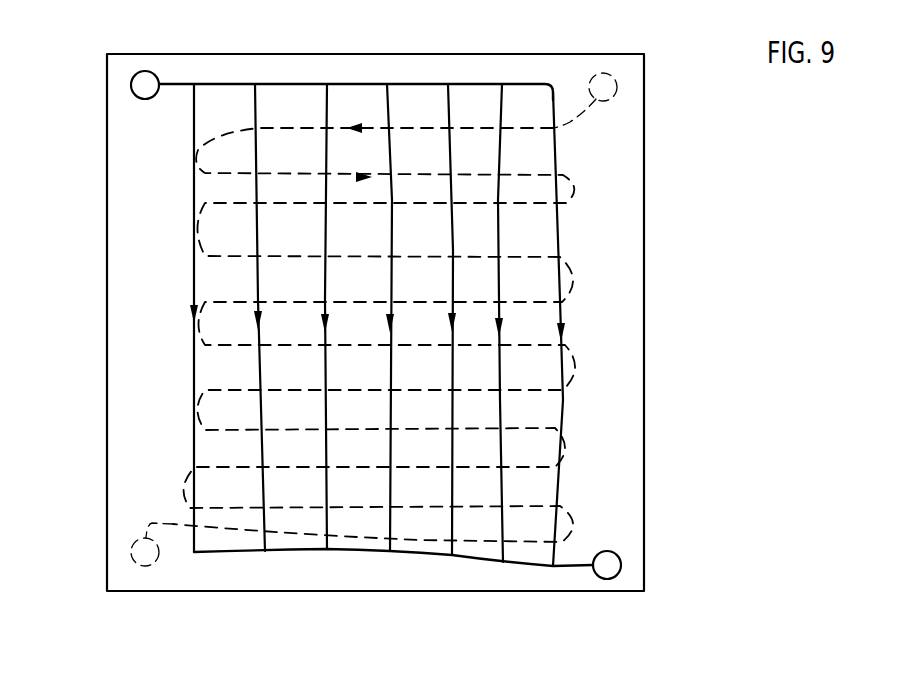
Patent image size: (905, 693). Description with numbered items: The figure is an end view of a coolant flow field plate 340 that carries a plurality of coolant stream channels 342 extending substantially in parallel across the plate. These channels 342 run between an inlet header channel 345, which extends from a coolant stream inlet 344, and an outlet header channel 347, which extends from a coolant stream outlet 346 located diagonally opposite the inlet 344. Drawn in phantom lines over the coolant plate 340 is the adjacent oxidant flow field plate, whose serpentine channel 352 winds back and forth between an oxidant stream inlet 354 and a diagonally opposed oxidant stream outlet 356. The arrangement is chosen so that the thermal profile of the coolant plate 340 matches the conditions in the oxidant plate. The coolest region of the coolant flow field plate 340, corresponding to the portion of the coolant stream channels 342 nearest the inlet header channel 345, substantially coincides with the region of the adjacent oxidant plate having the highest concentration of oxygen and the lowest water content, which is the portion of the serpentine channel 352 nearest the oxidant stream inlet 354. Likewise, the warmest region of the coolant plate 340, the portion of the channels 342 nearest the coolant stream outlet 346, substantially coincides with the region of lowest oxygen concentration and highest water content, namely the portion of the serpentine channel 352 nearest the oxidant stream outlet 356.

The coolant flow field plate 340 is at (540, 600).
The coolant stream channels 342 is at (260, 268).
The coolant stream inlet 344 is at (155, 71).
The inlet header channel 345 is at (374, 83).
The coolant stream outlet 346 is at (603, 579).
The outlet header channel 347 is at (363, 553).
The serpentine channel 352 is at (422, 128).
The oxidant stream inlet 354 is at (618, 67).
The oxidant stream outlet 356 is at (146, 566).